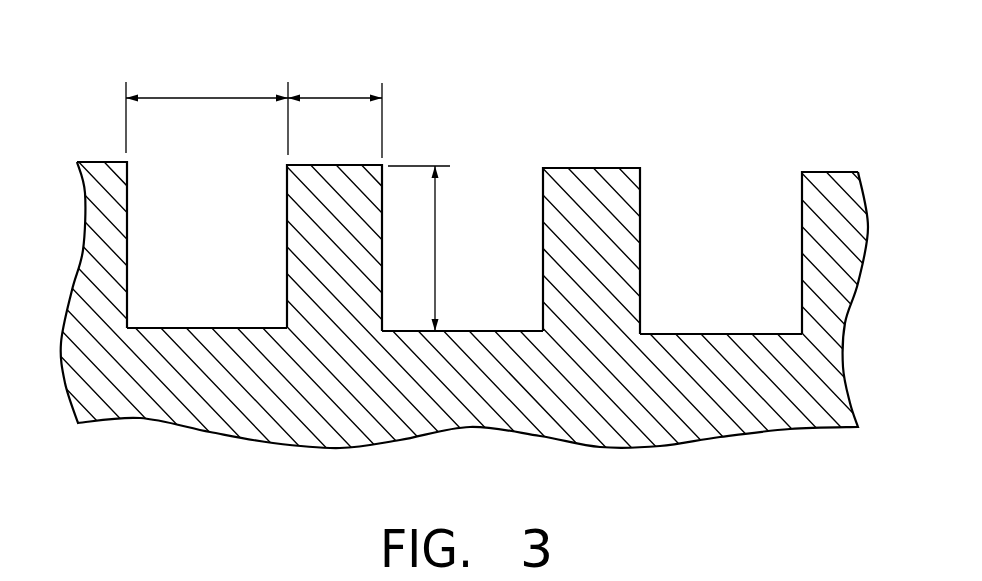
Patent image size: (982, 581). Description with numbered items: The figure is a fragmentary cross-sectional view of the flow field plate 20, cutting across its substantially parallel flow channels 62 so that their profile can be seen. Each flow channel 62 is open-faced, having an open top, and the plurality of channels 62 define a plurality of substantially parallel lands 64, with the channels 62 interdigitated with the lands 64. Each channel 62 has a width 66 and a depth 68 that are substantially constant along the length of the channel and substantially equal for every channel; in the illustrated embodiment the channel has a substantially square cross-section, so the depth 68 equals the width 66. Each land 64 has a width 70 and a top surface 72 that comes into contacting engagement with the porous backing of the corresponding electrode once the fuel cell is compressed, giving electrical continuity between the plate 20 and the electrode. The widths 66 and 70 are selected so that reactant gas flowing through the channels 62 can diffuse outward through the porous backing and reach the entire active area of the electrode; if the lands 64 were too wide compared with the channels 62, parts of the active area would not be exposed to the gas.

The flow field plate 20 is at (432, 97).
The flow channels 62 is at (220, 290).
The lands 64 is at (103, 173).
The width 66 is at (202, 97).
The depth 68 is at (436, 226).
The width 70 is at (338, 97).
The top surface 72 is at (578, 167).